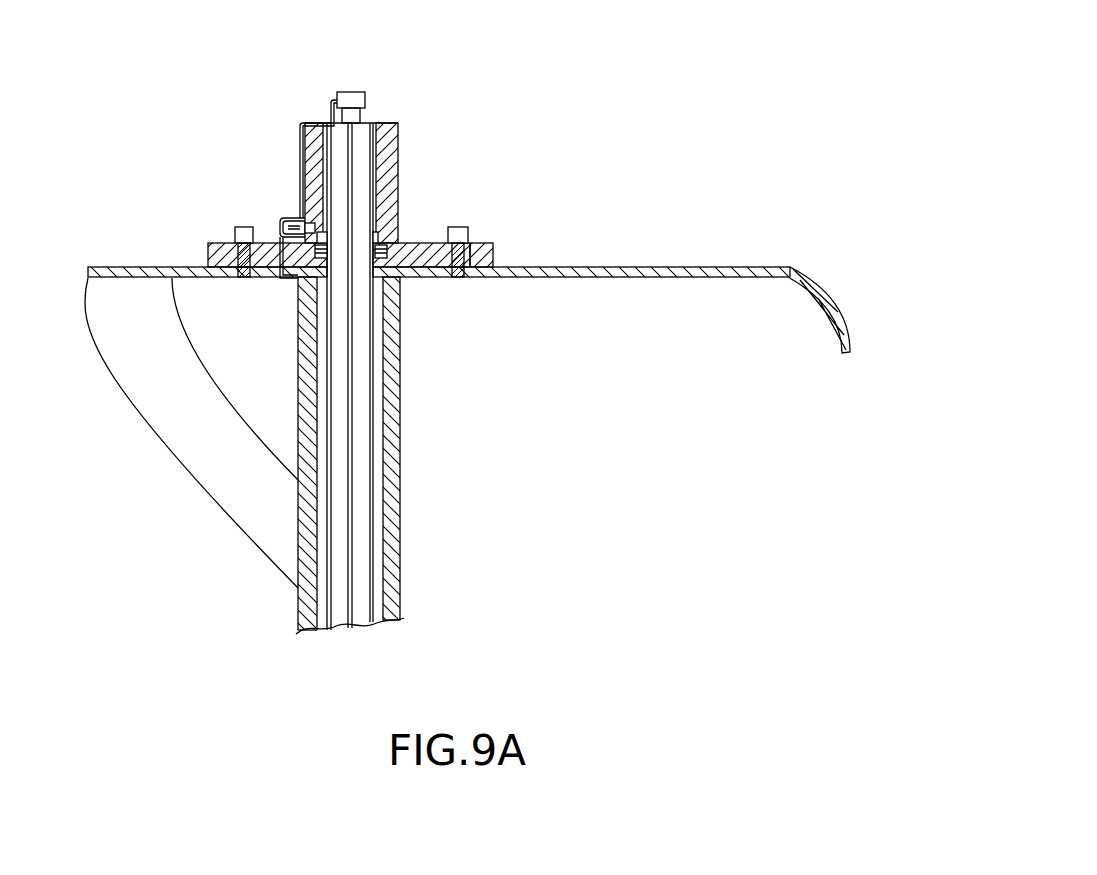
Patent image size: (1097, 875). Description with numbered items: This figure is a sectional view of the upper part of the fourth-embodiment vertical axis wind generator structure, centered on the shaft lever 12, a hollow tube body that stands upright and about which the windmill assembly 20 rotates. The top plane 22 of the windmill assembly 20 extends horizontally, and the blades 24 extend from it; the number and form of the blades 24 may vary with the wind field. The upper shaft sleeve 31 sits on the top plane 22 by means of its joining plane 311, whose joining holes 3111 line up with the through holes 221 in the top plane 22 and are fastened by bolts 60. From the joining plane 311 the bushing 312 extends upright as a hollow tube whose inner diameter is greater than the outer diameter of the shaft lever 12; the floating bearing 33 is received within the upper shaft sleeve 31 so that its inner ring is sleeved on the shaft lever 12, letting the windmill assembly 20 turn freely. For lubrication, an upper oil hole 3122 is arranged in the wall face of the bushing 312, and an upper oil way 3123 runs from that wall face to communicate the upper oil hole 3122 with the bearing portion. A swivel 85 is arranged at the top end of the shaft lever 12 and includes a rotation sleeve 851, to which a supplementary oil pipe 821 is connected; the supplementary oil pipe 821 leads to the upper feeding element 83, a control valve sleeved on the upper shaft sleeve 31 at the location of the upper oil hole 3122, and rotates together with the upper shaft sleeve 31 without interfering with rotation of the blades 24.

The shaft lever 12 is at (373, 517).
The windmill assembly 20 is at (469, 403).
The top plane 22 is at (585, 271).
The blades 24 is at (205, 427).
The through holes 221 is at (466, 280).
The upper shaft sleeve 31 is at (389, 171).
The joining plane 311 is at (417, 247).
The joining holes 3111 is at (487, 255).
The bushing 312 is at (385, 130).
The upper oil hole 3122 is at (310, 225).
The upper oil way 3123 is at (280, 238).
The floating bearing 33 is at (312, 287).
The bolts 60 is at (462, 229).
The upper feeding element 83 is at (297, 227).
The swivel 85 is at (342, 118).
The supplementary oil pipe 821 is at (312, 123).
The rotation sleeve 851 is at (353, 98).